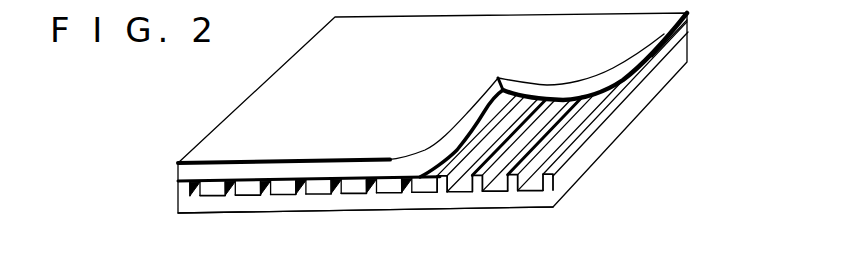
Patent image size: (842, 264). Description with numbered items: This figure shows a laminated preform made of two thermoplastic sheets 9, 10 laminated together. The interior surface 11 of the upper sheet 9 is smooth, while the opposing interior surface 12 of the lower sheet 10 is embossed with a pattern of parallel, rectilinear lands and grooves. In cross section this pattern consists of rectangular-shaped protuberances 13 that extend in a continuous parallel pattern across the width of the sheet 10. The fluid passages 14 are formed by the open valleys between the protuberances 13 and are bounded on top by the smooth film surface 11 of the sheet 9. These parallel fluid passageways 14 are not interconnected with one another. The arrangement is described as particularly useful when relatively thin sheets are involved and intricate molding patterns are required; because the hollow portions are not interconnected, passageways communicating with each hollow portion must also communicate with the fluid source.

The thermoplastic sheet 9 is at (688, 23).
The thermoplastic sheet 10 is at (686, 63).
The interior surface 11 is at (517, 103).
The interior surface 12 is at (455, 192).
The rectangular-shaped protuberances 13 is at (553, 159).
The fluid passages 14 is at (390, 183).